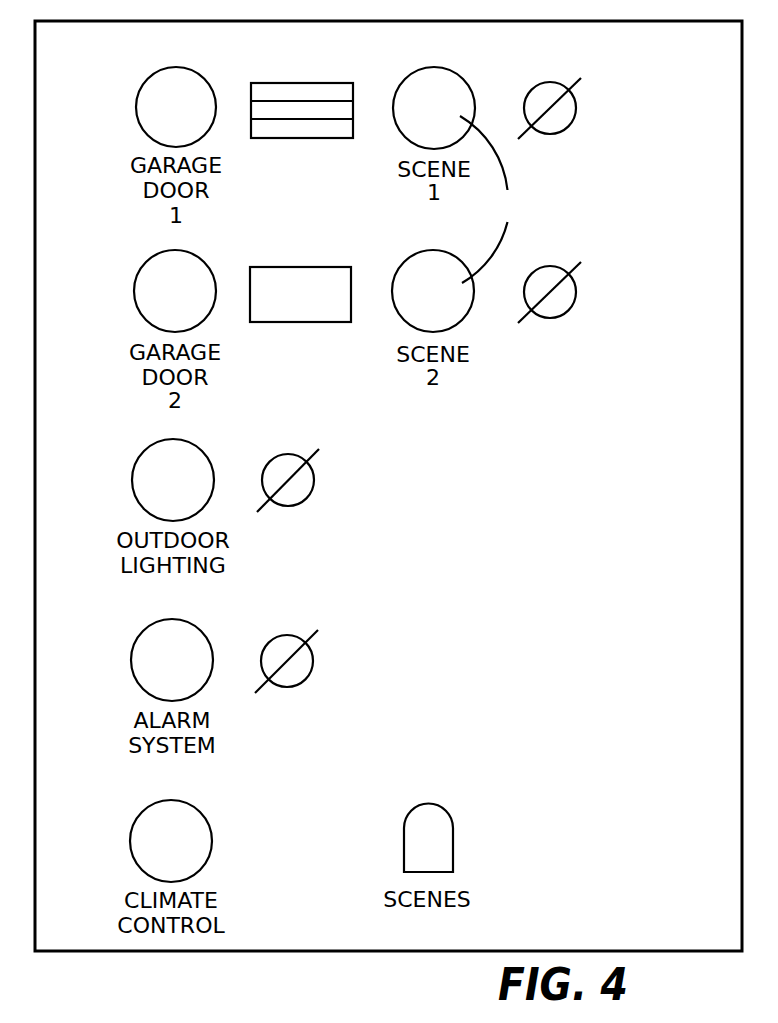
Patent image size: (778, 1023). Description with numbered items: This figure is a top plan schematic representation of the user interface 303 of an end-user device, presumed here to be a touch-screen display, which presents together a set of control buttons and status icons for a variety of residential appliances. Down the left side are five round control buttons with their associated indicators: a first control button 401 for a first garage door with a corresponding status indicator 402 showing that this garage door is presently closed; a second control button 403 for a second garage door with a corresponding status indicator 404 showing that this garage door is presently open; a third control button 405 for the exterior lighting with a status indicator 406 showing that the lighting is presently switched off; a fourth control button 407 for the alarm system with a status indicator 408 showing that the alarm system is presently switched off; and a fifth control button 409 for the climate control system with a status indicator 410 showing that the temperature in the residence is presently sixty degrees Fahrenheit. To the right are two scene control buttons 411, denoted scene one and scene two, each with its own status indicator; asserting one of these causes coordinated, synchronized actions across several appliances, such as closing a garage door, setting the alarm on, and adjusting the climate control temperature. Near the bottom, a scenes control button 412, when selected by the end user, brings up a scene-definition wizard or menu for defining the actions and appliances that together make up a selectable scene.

The user interface 303 is at (391, 992).
The first control button 401 is at (165, 76).
The status indicator 402 is at (303, 83).
The second control button 403 is at (162, 262).
The status indicator 404 is at (302, 267).
The third control button 405 is at (162, 448).
The status indicator 406 is at (278, 468).
The fourth control button 407 is at (160, 628).
The status indicator 408 is at (277, 649).
The fifth control button 409 is at (158, 810).
The status indicator 410 is at (255, 840).
The scene control buttons 411 is at (493, 199).
The scenes control button 412 is at (420, 814).